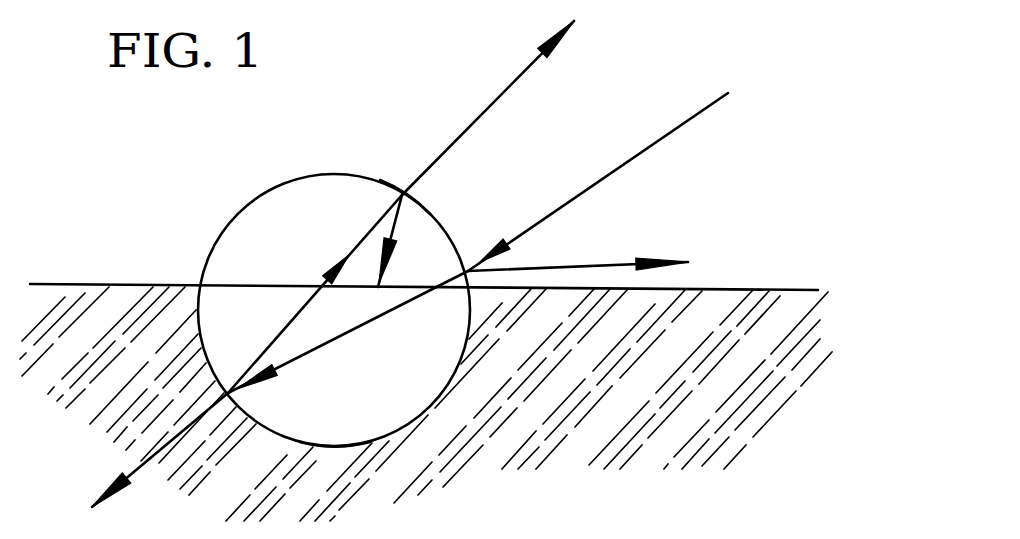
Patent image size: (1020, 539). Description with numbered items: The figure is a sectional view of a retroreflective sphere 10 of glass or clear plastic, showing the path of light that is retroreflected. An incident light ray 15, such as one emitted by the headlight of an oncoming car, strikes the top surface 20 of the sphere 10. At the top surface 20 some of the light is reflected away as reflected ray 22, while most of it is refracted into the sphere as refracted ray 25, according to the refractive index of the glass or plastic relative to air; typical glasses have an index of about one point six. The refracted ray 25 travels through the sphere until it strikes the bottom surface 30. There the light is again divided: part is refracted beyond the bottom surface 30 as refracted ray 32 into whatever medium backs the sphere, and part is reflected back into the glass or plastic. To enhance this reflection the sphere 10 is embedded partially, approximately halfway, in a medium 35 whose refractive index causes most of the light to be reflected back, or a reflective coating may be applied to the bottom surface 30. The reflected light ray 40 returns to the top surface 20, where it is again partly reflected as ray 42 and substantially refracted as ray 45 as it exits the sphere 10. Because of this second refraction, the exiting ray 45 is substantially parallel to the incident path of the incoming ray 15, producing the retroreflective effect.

The retroreflective sphere 10 is at (242, 210).
The incident light ray 15 is at (670, 133).
The top surface 20 is at (438, 222).
The reflected ray 22 is at (576, 264).
The refracted ray 25 is at (352, 333).
The bottom surface 30 is at (338, 447).
The refracted ray 32 is at (140, 467).
The medium 35 is at (765, 290).
The reflected light ray 40 is at (285, 327).
The ray 42 is at (386, 264).
The ray 45 is at (478, 118).